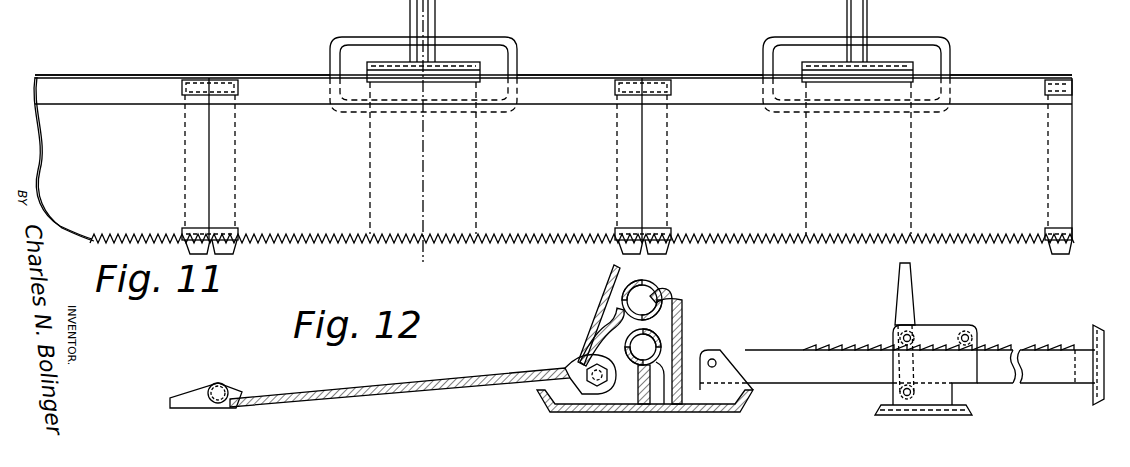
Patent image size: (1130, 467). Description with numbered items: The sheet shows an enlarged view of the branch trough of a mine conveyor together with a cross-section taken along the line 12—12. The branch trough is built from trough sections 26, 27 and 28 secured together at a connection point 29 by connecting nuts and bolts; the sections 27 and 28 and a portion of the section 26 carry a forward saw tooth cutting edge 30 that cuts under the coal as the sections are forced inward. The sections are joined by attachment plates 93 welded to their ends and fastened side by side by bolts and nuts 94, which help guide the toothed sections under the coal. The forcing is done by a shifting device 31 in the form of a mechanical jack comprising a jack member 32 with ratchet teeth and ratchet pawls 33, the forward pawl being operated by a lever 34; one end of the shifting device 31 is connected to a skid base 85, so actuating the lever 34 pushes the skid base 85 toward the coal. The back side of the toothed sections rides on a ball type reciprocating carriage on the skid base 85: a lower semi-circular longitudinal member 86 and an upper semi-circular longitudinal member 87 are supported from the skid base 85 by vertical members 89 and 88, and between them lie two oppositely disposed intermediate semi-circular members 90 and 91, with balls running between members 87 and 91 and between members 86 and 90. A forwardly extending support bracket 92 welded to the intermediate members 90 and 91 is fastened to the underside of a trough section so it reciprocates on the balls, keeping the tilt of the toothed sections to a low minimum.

In FIG. 11, the section line 12 is at (418, 266).
In FIG. 11, the trough section 26 is at (160, 63).
In FIG. 11, the trough section 27 is at (580, 76).
In FIG. 11, the trough section 28 is at (1005, 77).
In FIG. 11, the connection point 29 is at (240, 87).
In FIG. 11, the saw tooth cutting edge 30 is at (318, 243).
In FIG. 12, the shifting device 31 is at (977, 332).
In FIG. 12, the jack member 32 is at (830, 350).
In FIG. 12, the ratchet pawls 33 is at (893, 345).
In FIG. 12, the lever 34 is at (910, 284).
In FIG. 12, the skid base 85 is at (708, 406).
In FIG. 12, the lower semi-circular longitudinal member 86 is at (664, 404).
In FIG. 12, the upper semi-circular longitudinal member 87 is at (648, 283).
In FIG. 12, the vertical member 88 is at (683, 302).
In FIG. 12, the vertical member 89 is at (640, 404).
In FIG. 12, the intermediate semi-circular longitudinal member 90 is at (662, 340).
In FIG. 12, the intermediate semi-circular longitudinal member 91 is at (620, 312).
In FIG. 11, the support bracket 92 is at (480, 210).
In FIG. 12, the support bracket 92 is at (482, 384).
In FIG. 11, the attachment plates 93 is at (184, 160).
In FIG. 11, the bolts and nuts 94 is at (232, 252).